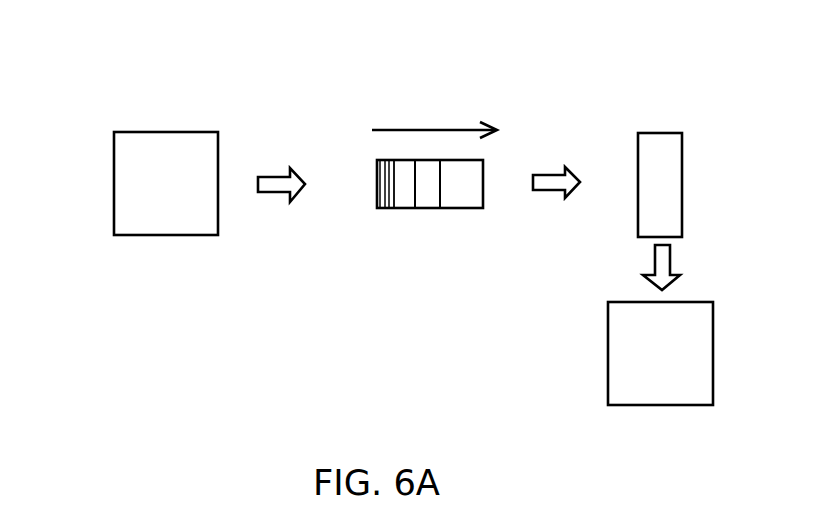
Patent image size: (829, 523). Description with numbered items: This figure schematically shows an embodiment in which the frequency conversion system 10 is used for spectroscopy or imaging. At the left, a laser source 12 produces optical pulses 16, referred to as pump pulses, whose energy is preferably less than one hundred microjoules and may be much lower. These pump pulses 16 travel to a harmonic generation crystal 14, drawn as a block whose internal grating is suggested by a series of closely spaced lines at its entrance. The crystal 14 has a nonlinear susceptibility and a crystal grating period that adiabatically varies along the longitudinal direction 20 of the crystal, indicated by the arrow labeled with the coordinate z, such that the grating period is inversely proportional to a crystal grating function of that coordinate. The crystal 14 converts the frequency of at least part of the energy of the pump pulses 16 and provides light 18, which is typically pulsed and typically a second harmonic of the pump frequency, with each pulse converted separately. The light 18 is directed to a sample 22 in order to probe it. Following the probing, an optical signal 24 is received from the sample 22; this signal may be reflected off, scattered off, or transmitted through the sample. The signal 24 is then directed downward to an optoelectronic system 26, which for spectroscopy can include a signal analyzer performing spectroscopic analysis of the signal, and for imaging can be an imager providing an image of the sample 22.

The system for frequency conversion 10 is at (95, 42).
The laser source 12 is at (147, 222).
The harmonic generation crystal 14 is at (427, 203).
The optical pulses 16 is at (277, 185).
The light 18 is at (552, 183).
The longitudinal direction 20 is at (404, 127).
The sample 22 is at (663, 142).
The optical signal 24 is at (660, 262).
The optoelectronic system 26 is at (642, 393).